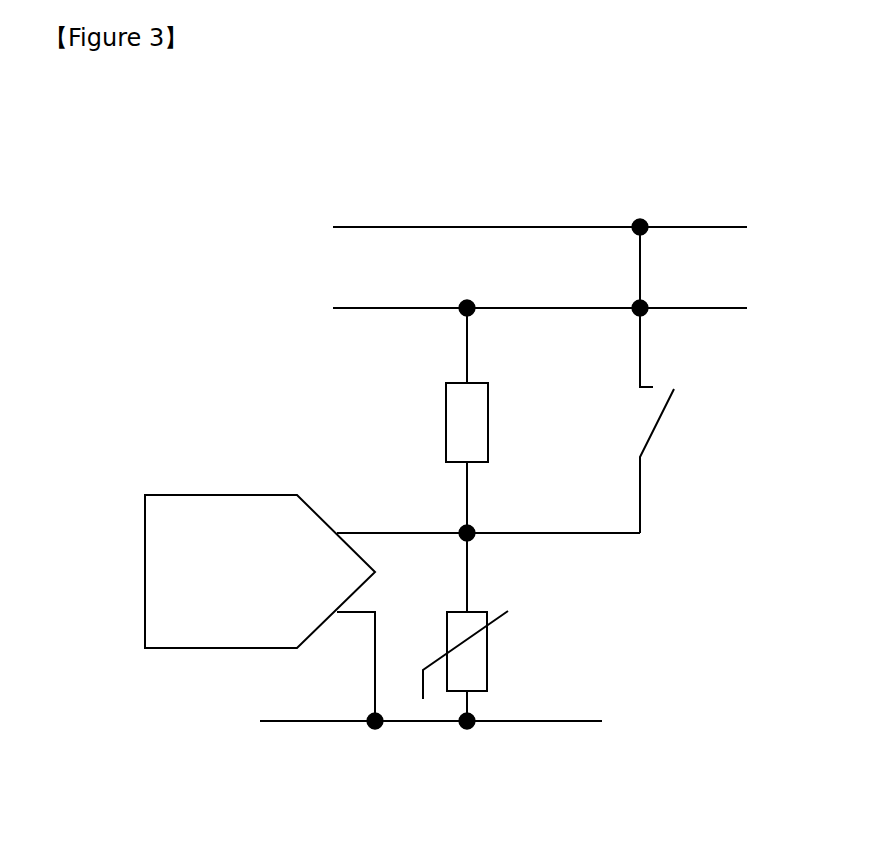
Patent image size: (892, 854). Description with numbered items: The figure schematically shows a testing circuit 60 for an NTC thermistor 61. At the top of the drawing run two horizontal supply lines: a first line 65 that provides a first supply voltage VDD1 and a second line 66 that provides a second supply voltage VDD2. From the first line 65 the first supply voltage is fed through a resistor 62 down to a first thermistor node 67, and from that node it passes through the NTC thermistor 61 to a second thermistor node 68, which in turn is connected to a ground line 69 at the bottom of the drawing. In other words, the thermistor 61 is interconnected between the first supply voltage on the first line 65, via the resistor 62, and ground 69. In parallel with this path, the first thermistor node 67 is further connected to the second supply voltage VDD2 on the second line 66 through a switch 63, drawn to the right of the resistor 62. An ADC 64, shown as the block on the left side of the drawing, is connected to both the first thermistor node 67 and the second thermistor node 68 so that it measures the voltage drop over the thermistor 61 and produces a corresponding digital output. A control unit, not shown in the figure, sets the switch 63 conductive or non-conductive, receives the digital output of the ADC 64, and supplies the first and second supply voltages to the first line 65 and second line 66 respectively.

The testing circuit 60 is at (215, 305).
The NTC thermistor 61 is at (489, 649).
The resistor 62 is at (445, 423).
The switch 63 is at (660, 425).
The ADC 64 is at (220, 493).
The first line 65 is at (698, 306).
The second line 66 is at (412, 225).
The first thermistor node 67 is at (458, 527).
The second thermistor node 68 is at (466, 729).
The ground line 69 is at (553, 725).